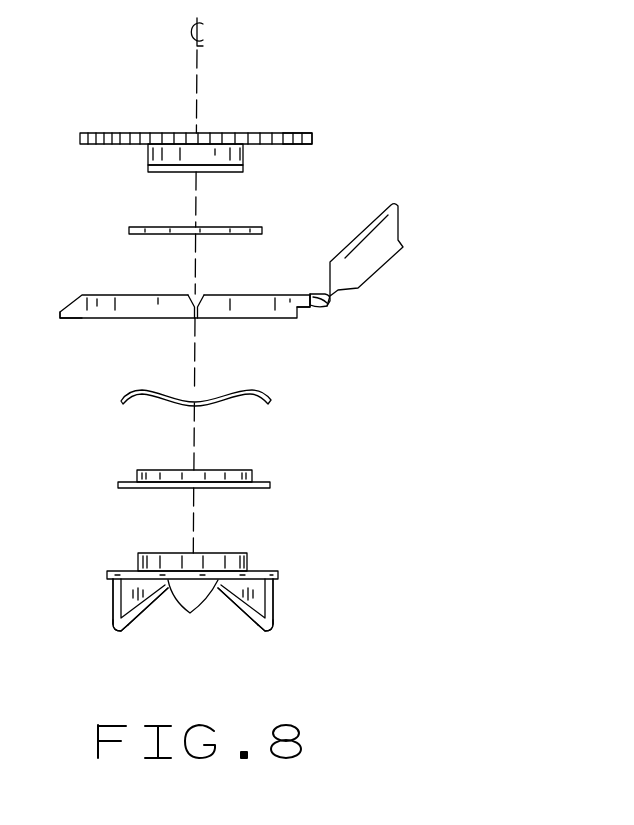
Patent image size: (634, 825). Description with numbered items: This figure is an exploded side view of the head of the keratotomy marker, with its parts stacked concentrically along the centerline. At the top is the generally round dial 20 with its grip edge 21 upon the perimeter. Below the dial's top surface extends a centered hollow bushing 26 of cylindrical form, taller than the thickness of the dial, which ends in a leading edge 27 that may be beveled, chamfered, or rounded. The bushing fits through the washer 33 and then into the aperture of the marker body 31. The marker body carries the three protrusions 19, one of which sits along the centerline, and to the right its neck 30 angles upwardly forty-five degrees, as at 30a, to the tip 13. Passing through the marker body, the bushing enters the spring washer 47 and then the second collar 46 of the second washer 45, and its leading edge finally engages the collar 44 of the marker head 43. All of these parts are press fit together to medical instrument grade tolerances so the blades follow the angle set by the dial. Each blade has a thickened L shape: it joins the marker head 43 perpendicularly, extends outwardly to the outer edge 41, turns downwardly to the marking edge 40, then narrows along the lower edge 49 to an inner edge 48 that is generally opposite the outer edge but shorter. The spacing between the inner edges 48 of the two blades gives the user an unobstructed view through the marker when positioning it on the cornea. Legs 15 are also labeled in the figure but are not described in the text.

The tip 13 is at (373, 231).
The leg 15 is at (130, 589).
The protrusions 19 is at (60, 315).
The dial 20 is at (242, 126).
The grip edge 21 is at (312, 137).
The bushing 26 is at (147, 155).
The leading edge 27 is at (153, 172).
The neck 30 is at (323, 306).
The neck angle 30a is at (318, 292).
The marker body 31 is at (76, 294).
The washer 33 is at (129, 231).
The marking edge 40 is at (126, 636).
The outer edge 41 is at (104, 600).
The marker head 43 is at (125, 571).
The collar 44 is at (160, 553).
The second washer 45 is at (270, 486).
The second collar 46 is at (236, 465).
The spring washer 47 is at (272, 400).
The inner edge 48 is at (208, 597).
The lower edge 49 is at (153, 608).